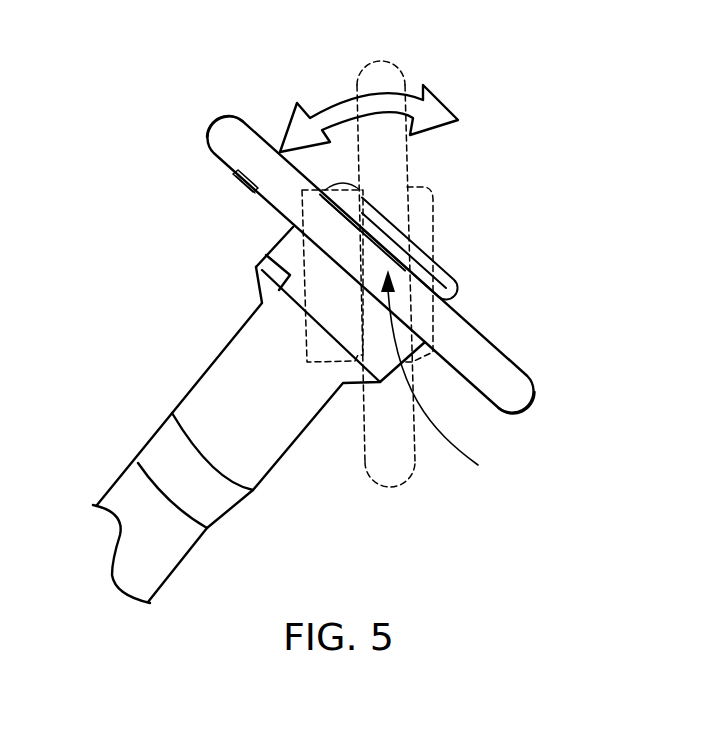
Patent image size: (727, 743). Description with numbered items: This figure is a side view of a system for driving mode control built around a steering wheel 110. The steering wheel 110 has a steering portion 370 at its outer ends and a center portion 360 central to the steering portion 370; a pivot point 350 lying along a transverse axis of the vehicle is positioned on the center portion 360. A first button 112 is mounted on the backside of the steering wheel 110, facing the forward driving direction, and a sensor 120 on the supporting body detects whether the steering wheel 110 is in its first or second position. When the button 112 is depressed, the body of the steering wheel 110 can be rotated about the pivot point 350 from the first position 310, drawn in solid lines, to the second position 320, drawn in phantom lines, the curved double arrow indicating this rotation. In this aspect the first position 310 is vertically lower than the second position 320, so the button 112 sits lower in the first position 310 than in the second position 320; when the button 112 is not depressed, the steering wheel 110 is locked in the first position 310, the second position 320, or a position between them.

The first position 310 is at (156, 54).
The steering wheel 110 is at (215, 115).
The first button 112 is at (238, 188).
The sensor 120 is at (255, 267).
The second position 320 is at (361, 58).
The pivot point 350 is at (377, 258).
The center portion 360 is at (457, 378).
The steering portion 370 is at (234, 130).